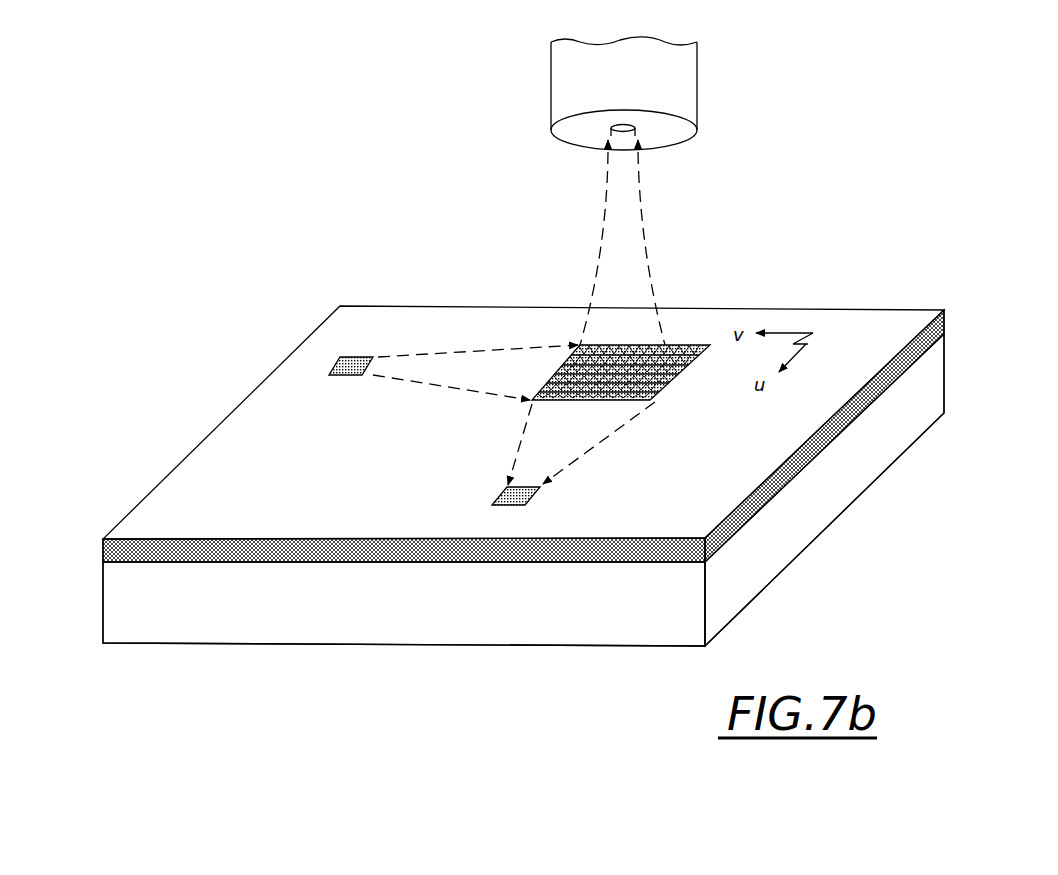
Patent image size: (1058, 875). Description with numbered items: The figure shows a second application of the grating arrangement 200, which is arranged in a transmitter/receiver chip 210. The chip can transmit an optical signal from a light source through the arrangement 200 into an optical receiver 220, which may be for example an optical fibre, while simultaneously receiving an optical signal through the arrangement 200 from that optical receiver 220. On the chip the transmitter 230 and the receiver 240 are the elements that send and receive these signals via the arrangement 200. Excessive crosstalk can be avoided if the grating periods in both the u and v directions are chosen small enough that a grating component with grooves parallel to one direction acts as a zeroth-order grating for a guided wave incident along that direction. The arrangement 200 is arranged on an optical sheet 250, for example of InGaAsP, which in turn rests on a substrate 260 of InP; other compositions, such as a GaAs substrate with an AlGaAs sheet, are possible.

The arrangement 200 is at (685, 345).
The transmitter/receiver chip 210 is at (203, 473).
The optical receiver 220 is at (677, 78).
The transmitter 230 is at (335, 362).
The receiver 240 is at (497, 497).
The optical sheet 250 is at (879, 322).
The substrate 260 is at (812, 520).